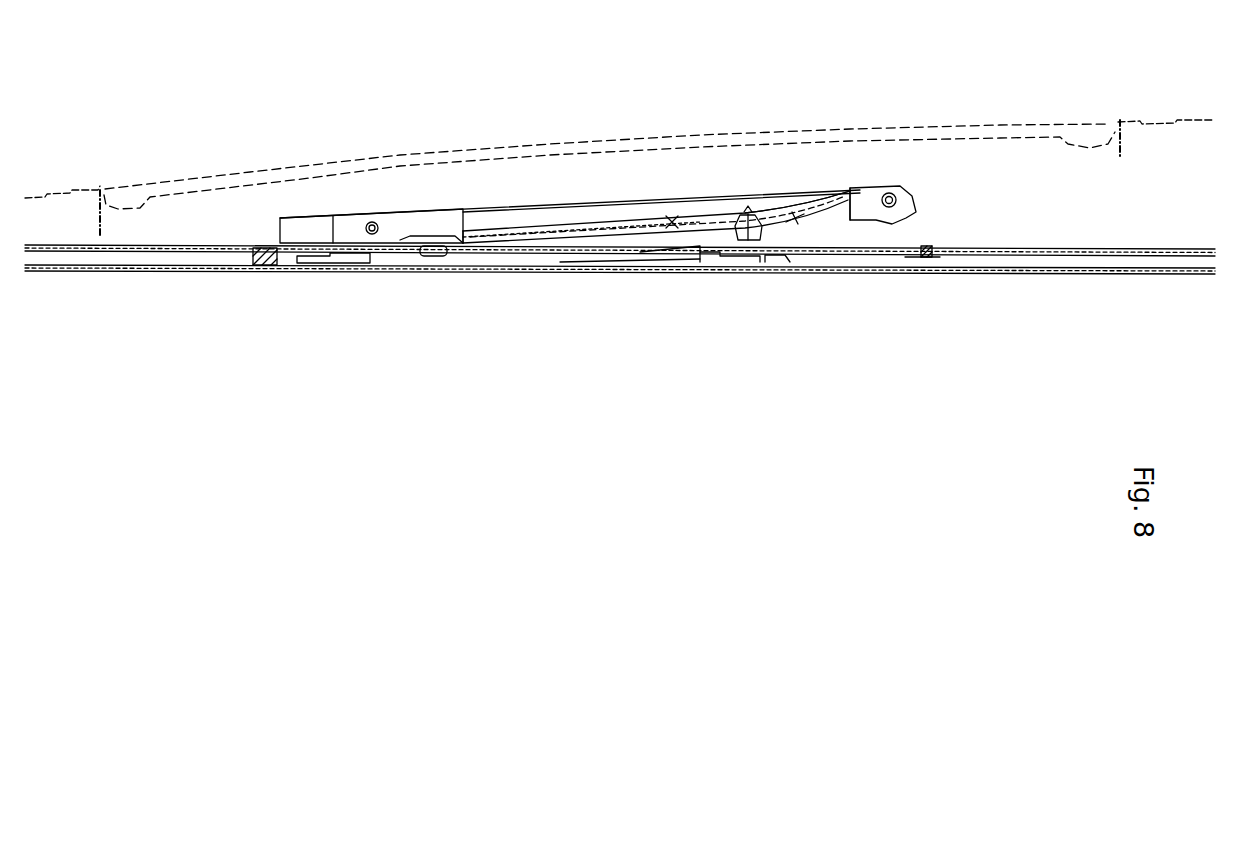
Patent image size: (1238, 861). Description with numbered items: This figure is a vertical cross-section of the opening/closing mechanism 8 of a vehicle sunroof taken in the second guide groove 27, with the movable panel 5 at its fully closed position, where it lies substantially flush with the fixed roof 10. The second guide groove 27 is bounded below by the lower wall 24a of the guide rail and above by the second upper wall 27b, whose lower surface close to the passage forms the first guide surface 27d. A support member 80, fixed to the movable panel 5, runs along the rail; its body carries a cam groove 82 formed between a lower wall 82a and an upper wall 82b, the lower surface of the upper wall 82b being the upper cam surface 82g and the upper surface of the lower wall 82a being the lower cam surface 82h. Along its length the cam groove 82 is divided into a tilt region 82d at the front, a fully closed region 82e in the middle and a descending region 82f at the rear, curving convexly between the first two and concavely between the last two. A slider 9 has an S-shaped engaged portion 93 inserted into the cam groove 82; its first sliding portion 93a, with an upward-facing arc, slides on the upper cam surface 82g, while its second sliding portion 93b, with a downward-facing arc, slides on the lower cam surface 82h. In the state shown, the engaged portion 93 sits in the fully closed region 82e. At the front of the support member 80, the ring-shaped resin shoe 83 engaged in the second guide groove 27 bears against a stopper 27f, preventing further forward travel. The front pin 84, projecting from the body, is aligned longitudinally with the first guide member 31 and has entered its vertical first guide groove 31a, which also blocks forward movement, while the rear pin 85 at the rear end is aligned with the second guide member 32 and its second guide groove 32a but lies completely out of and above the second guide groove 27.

The movable panel 5 is at (984, 125).
The opening/closing mechanism 8 is at (682, 88).
The slider 9 is at (786, 264).
The fixed roof 10 is at (64, 190).
The lower wall 24a is at (228, 273).
The second guide groove 27 is at (556, 274).
The second upper wall 27b is at (228, 246).
The first guide surface 27d is at (965, 274).
The stopper 27f is at (255, 247).
The first guide member 31 is at (400, 240).
The first guide groove 31a is at (428, 244).
The second guide member 32 is at (934, 248).
The second guide groove 32a is at (916, 270).
The support member 80 is at (449, 208).
The cam groove 82 is at (608, 232).
The lower wall 82a is at (648, 256).
The upper wall 82b is at (495, 230).
The tilt region 82d is at (552, 216).
The fully closed region 82e is at (782, 220).
The descending region 82f is at (822, 208).
The upper cam surface 82g is at (664, 220).
The lower cam surface 82h is at (686, 243).
The shoe 83 is at (375, 274).
The front pin 84 is at (428, 262).
The rear pin 85 is at (916, 214).
The engaged portion 93 is at (738, 216).
The first sliding portion 93a is at (746, 212).
The second sliding portion 93b is at (750, 222).